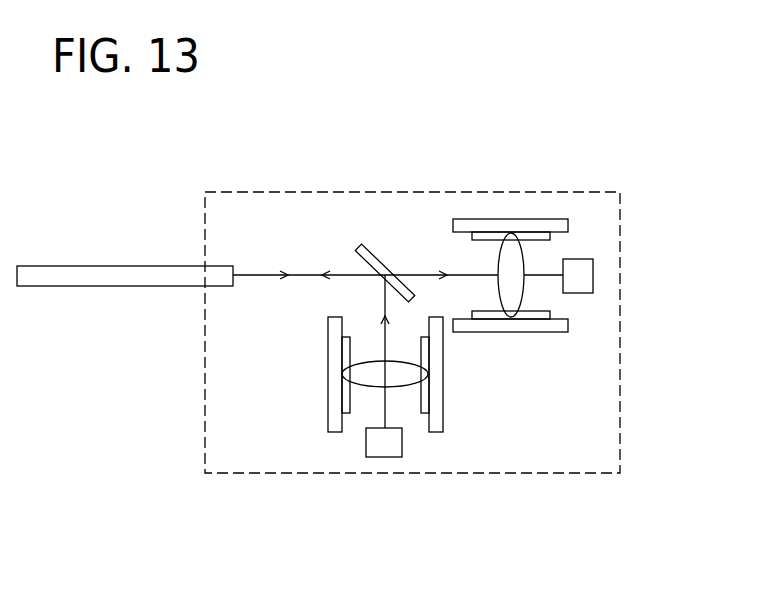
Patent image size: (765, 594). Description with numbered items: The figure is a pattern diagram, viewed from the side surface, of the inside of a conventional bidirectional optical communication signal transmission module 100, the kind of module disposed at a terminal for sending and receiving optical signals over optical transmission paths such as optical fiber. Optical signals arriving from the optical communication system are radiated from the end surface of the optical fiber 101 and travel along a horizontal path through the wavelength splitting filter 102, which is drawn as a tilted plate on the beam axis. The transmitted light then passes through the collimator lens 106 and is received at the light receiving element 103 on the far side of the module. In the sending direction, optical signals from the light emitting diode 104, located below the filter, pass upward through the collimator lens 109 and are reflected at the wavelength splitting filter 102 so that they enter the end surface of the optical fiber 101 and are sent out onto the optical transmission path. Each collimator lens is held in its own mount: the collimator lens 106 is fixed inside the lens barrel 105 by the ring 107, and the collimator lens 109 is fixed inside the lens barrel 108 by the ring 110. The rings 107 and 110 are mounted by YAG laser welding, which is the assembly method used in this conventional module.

The optical communication signal transmission module 100 is at (580, 475).
The optical fiber 101 is at (96, 264).
The wavelength splitting filter 102 is at (377, 247).
The light receiving element 103 is at (593, 277).
The light emitting diode 104 is at (385, 457).
The lens barrel 105 is at (511, 207).
The collimator lens 106 is at (523, 251).
The ring 107 is at (490, 238).
The lens barrel 108 is at (443, 392).
The collimator lens 109 is at (408, 390).
The ring 110 is at (353, 410).